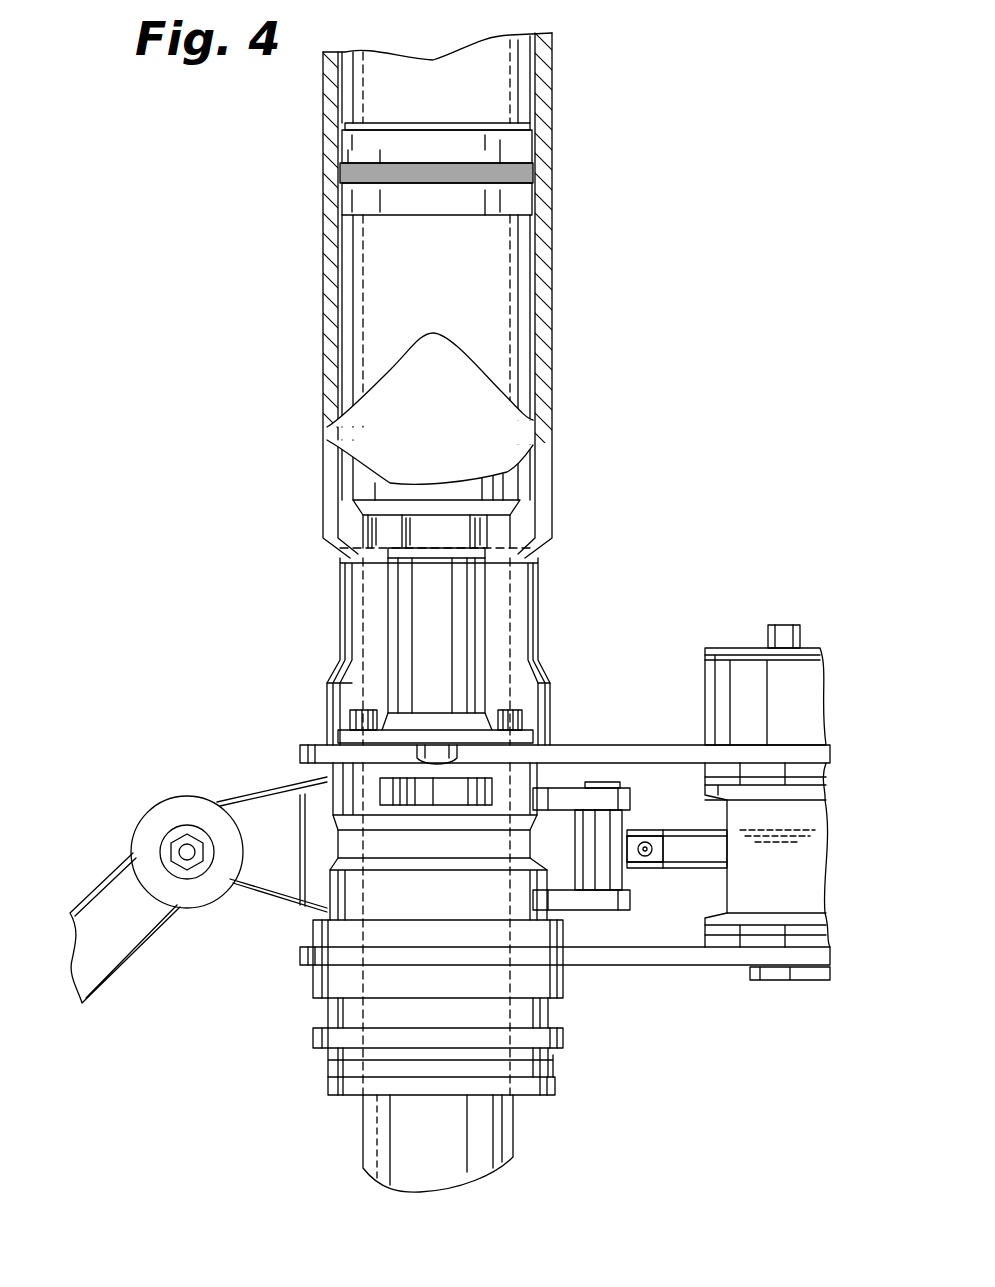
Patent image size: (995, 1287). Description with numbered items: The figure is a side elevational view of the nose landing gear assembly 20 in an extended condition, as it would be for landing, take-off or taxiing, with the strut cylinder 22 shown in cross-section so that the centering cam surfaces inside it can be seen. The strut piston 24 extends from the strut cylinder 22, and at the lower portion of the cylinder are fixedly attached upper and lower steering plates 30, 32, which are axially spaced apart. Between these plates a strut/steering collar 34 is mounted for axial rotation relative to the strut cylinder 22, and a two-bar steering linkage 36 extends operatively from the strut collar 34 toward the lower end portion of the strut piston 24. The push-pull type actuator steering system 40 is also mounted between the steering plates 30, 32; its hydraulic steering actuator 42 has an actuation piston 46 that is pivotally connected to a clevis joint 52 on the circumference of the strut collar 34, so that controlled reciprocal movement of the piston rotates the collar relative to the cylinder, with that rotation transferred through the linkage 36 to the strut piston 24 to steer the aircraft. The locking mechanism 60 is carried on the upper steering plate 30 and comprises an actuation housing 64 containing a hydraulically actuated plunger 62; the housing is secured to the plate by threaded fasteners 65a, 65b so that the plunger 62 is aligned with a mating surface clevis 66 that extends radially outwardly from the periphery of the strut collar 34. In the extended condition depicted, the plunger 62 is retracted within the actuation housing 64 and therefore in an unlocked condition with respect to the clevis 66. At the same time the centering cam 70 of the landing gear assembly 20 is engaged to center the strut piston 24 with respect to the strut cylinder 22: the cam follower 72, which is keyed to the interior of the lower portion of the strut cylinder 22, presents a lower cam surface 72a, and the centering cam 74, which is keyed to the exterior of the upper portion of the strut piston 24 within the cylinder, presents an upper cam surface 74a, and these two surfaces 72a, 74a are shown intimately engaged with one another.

The nose landing gear assembly 20 is at (606, 524).
The strut cylinder 22 is at (548, 330).
The strut piston 24 is at (380, 152).
The upper steering plate 30 is at (640, 755).
The lower steering plate 32 is at (695, 958).
The strut/steering collar 34 is at (340, 800).
The two-bar steering linkage 36 is at (92, 905).
The push-pull type actuator steering system 40 is at (828, 724).
The right hydraulic steering actuator 42 is at (825, 835).
The actuation piston 46 is at (688, 840).
The clevis joint 52 is at (590, 900).
The locking mechanism 60 is at (492, 656).
The hydraulically actuated plunger 62 is at (445, 762).
The actuation housing 64 is at (462, 580).
The threaded fastener 65a is at (352, 720).
The threaded fastener 65b is at (515, 716).
The mating surface clevis 66 is at (380, 795).
The centering cam 70 is at (437, 324).
The cam follower 72 is at (385, 445).
The lower cam surface 72a is at (405, 355).
The centering cam 74 is at (400, 265).
The upper cam surface 74a is at (405, 320).